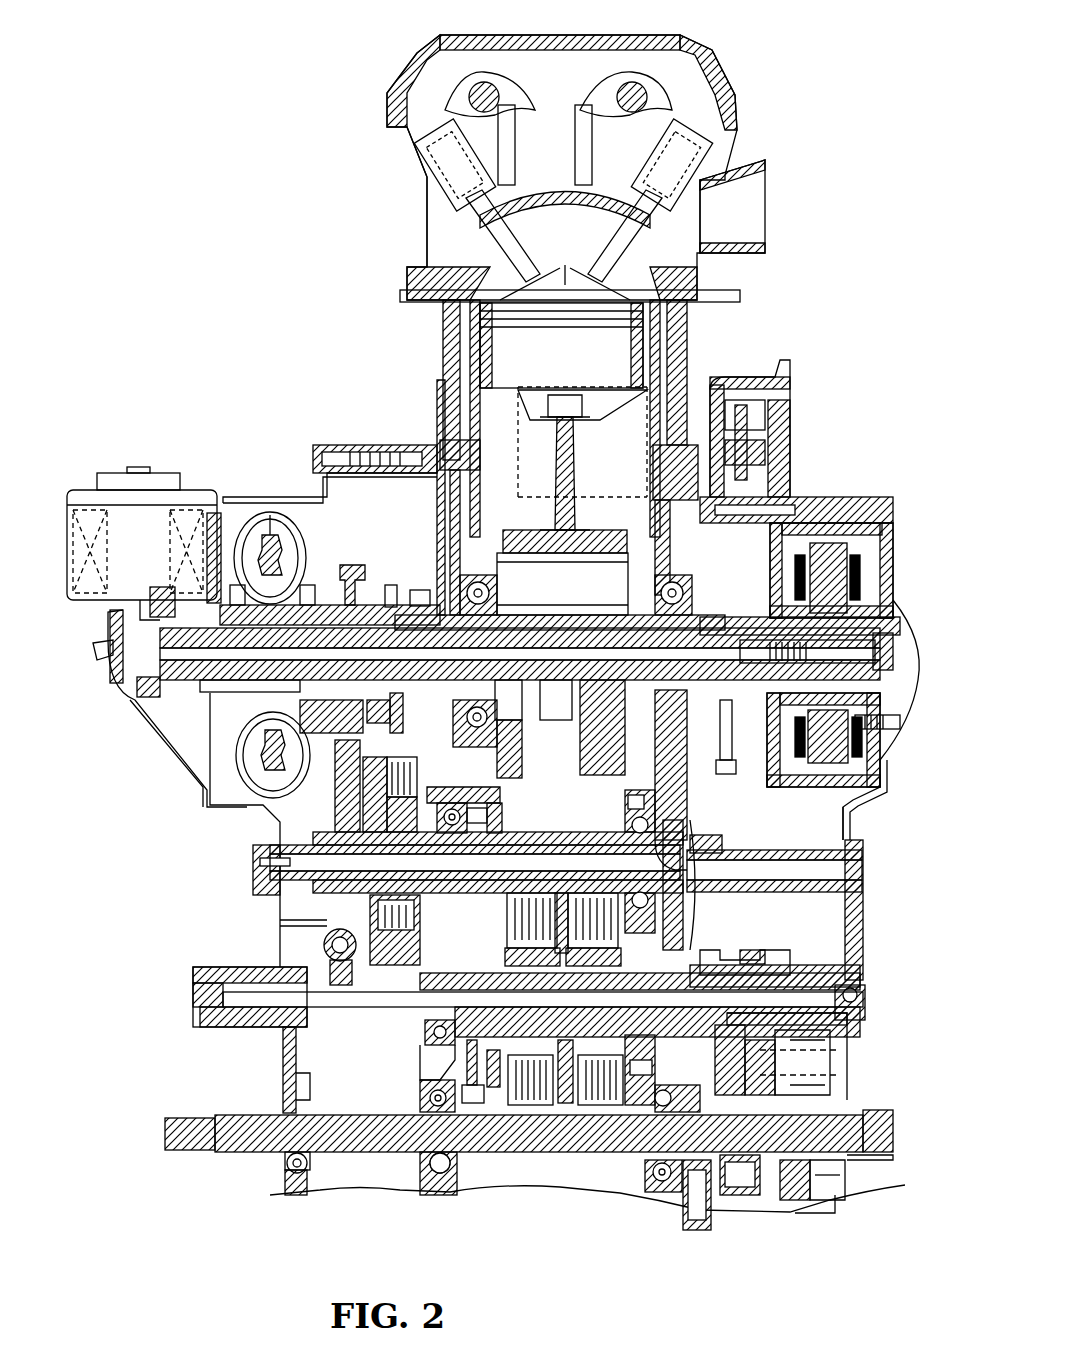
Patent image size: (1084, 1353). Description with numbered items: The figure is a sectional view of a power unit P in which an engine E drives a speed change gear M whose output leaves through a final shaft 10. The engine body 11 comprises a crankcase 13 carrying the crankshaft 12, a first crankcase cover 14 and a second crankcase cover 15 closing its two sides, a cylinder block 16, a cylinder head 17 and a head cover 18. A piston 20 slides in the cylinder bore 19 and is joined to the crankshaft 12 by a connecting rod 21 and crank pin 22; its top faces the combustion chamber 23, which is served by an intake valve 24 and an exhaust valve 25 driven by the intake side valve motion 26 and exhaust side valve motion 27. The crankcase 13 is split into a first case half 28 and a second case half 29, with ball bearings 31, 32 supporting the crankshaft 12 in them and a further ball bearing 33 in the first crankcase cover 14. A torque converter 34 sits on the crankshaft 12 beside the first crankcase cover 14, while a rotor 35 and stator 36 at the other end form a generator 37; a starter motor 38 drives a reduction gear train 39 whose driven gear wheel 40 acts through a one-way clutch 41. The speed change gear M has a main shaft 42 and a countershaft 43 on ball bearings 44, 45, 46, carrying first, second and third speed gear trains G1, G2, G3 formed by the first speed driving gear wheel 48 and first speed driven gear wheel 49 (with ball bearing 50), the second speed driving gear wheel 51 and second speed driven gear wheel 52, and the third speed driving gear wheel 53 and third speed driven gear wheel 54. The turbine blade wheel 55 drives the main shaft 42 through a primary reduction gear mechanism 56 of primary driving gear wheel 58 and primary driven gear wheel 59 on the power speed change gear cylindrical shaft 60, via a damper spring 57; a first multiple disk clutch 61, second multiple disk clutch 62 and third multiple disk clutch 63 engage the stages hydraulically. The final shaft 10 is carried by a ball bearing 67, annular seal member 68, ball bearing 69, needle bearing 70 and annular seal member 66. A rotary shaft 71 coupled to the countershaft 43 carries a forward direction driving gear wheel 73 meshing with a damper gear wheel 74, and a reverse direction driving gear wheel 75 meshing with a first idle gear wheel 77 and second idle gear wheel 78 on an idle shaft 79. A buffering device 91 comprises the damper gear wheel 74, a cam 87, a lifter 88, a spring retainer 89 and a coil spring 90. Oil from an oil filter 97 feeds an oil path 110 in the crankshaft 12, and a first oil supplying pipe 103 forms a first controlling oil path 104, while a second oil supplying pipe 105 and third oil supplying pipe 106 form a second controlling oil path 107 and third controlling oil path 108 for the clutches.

The final shaft 10 is at (870, 1125).
The engine body 11 is at (438, 398).
The crankshaft 12 is at (422, 615).
The crankcase 13 is at (398, 440).
The first crankcase cover 14 is at (296, 1196).
The second crankcase cover 15 is at (855, 920).
The cylinder block 16 is at (445, 340).
The cylinder head 17 is at (730, 148).
The head cover 18 is at (660, 36).
The cylinder bore 19 is at (660, 360).
The piston 20 is at (550, 366).
The connecting rod 21 is at (573, 462).
The crank pin 22 is at (575, 594).
The combustion chamber 23 is at (562, 268).
The intake valve 24 is at (625, 245).
The exhaust valve 25 is at (505, 250).
The intake side valve motion 26 is at (615, 70).
The exhaust side valve motion 27 is at (505, 70).
The first case half 28 is at (425, 1197).
The second case half 29 is at (660, 1200).
The ball bearing 31 is at (480, 575).
The ball bearing 32 is at (662, 582).
The ball bearing 33 is at (177, 703).
The torque converter 34 is at (280, 512).
The rotor 35 is at (800, 790).
The stator 36 is at (880, 765).
The generator 37 is at (878, 622).
The starter motor 38 is at (568, 385).
The reduction gear train 39 is at (762, 478).
The driven gear wheel 40 is at (725, 780).
The one-way clutch 41 is at (755, 752).
The main shaft 42 is at (582, 832).
The countershaft 43 is at (420, 1085).
The ball bearing 44 is at (672, 825).
The ball bearing 45 is at (425, 1030).
The ball bearing 46 is at (668, 962).
The first speed driving gear wheel 48 is at (462, 800).
The first speed driven gear wheel 49 is at (445, 1132).
The ball bearing 50 is at (440, 790).
The second speed driving gear wheel 51 is at (505, 808).
The second speed driven gear wheel 52 is at (498, 1090).
The third speed driving gear wheel 53 is at (636, 790).
The third speed driven gear wheel 54 is at (640, 1070).
The turbine blade wheel 55 is at (300, 520).
The primary reduction gear mechanism 56 is at (330, 528).
The damper spring 57 is at (322, 940).
The primary driving gear wheel 58 is at (352, 565).
The primary driven gear wheel 59 is at (350, 1008).
The power speed change gear cylindrical shaft 60 is at (330, 828).
The first multiple disk clutch 61 is at (335, 803).
The second multiple disk clutch 62 is at (530, 890).
The third multiple disk clutch 63 is at (605, 890).
The annular seal member 66 is at (860, 1163).
The ball bearing 67 is at (445, 1196).
The annular seal member 68 is at (285, 1162).
The ball bearing 69 is at (668, 1178).
The needle bearing 70 is at (832, 1070).
The rotary shaft 71 is at (860, 990).
The forward direction driving gear wheel 73 is at (705, 962).
The damper gear wheel 74 is at (700, 1232).
The reverse direction driving gear wheel 75 is at (857, 955).
The first idle gear wheel 77 is at (852, 805).
The second idle gear wheel 78 is at (712, 838).
The idle shaft 79 is at (775, 895).
The cam 87 is at (699, 1115).
The lifter 88 is at (745, 1188).
The spring retainer 89 is at (840, 1205).
The coil spring 90 is at (785, 1200).
The buffering device 91 is at (835, 1208).
The oil filter 97 is at (165, 470).
The first oil supplying pipe 103 is at (272, 890).
The first controlling oil path 104 is at (258, 857).
The second oil supplying pipe 105 is at (380, 1012).
The third oil supplying pipe 106 is at (250, 1027).
The second controlling oil path 107 is at (323, 1012).
The third controlling oil path 108 is at (283, 1027).
The oil path 110 is at (257, 745).
The engine E is at (700, 322).
The speed change gear M is at (567, 842).
The power unit P is at (245, 870).
The first speed gear train G1 is at (471, 1106).
The second speed gear train G2 is at (497, 1100).
The third speed gear train G3 is at (622, 1082).